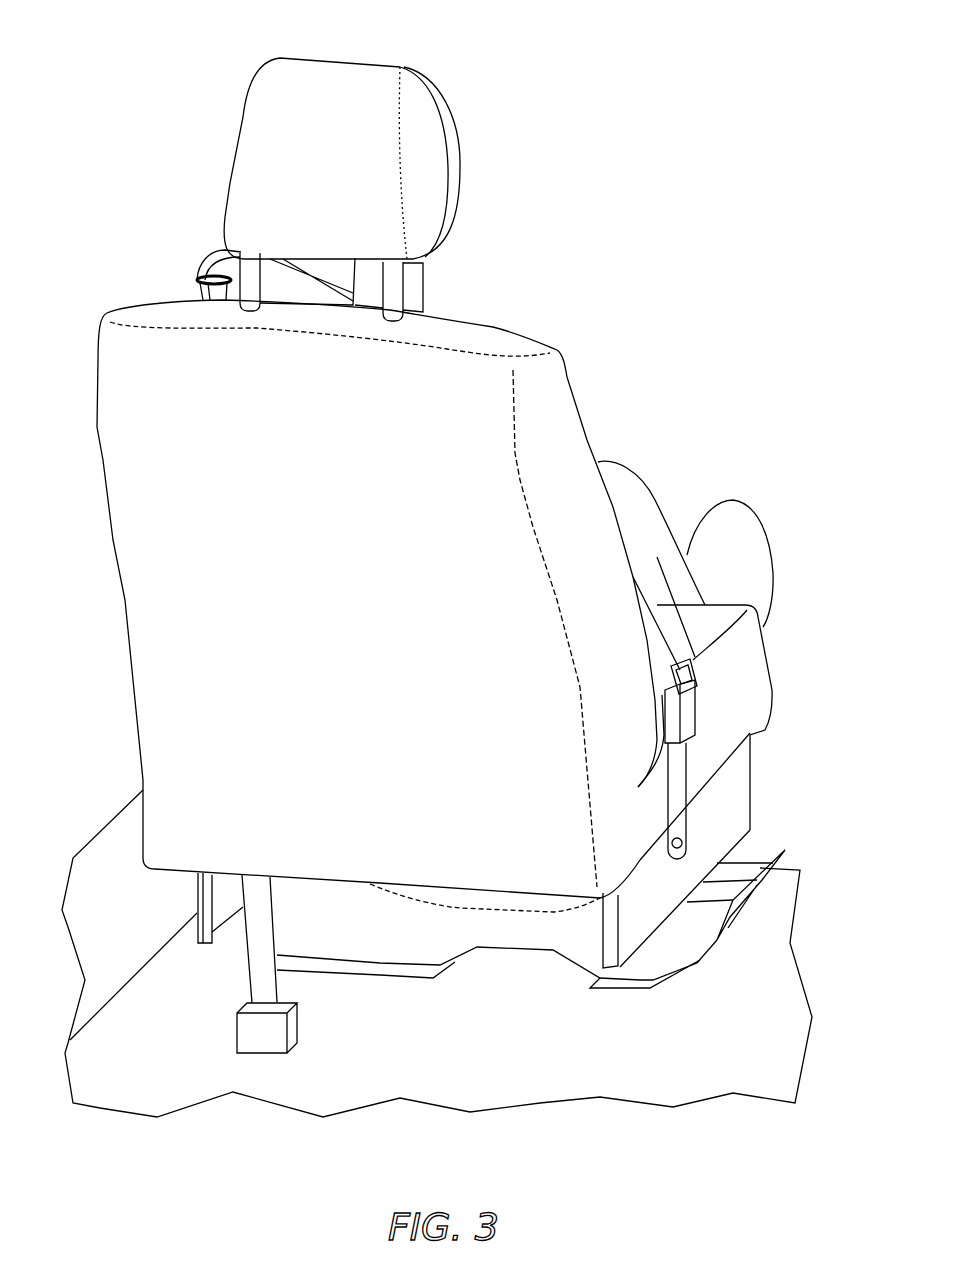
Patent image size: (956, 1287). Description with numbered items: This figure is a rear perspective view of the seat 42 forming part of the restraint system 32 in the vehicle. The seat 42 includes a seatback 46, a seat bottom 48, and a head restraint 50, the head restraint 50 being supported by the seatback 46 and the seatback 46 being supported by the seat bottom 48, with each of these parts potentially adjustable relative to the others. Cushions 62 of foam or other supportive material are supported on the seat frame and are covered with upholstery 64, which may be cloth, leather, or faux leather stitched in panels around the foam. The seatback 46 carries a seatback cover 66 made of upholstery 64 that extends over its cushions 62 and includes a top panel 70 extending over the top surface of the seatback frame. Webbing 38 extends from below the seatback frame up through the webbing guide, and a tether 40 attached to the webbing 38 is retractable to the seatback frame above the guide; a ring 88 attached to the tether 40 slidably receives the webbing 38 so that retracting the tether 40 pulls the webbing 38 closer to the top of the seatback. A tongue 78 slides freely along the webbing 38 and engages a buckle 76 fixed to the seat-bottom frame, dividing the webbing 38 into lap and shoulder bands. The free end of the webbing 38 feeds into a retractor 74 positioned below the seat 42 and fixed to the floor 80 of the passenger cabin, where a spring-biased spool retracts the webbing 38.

The restraint system 32 is at (131, 139).
The head restraint 50 is at (300, 62).
The tether 40 is at (197, 297).
The ring 88 is at (198, 278).
The seat 42 is at (113, 623).
The top panel 70 is at (493, 323).
The seatback 46 is at (100, 458).
The seatback cover 66 is at (112, 540).
The cushions 62 is at (553, 400).
The upholstery 64 is at (590, 443).
The seat bottom 48 is at (773, 683).
The tongue 78 is at (695, 675).
The buckle 76 is at (685, 717).
The webbing 38 is at (278, 940).
The retractor 74 is at (300, 1030).
The floor 80 is at (672, 1065).